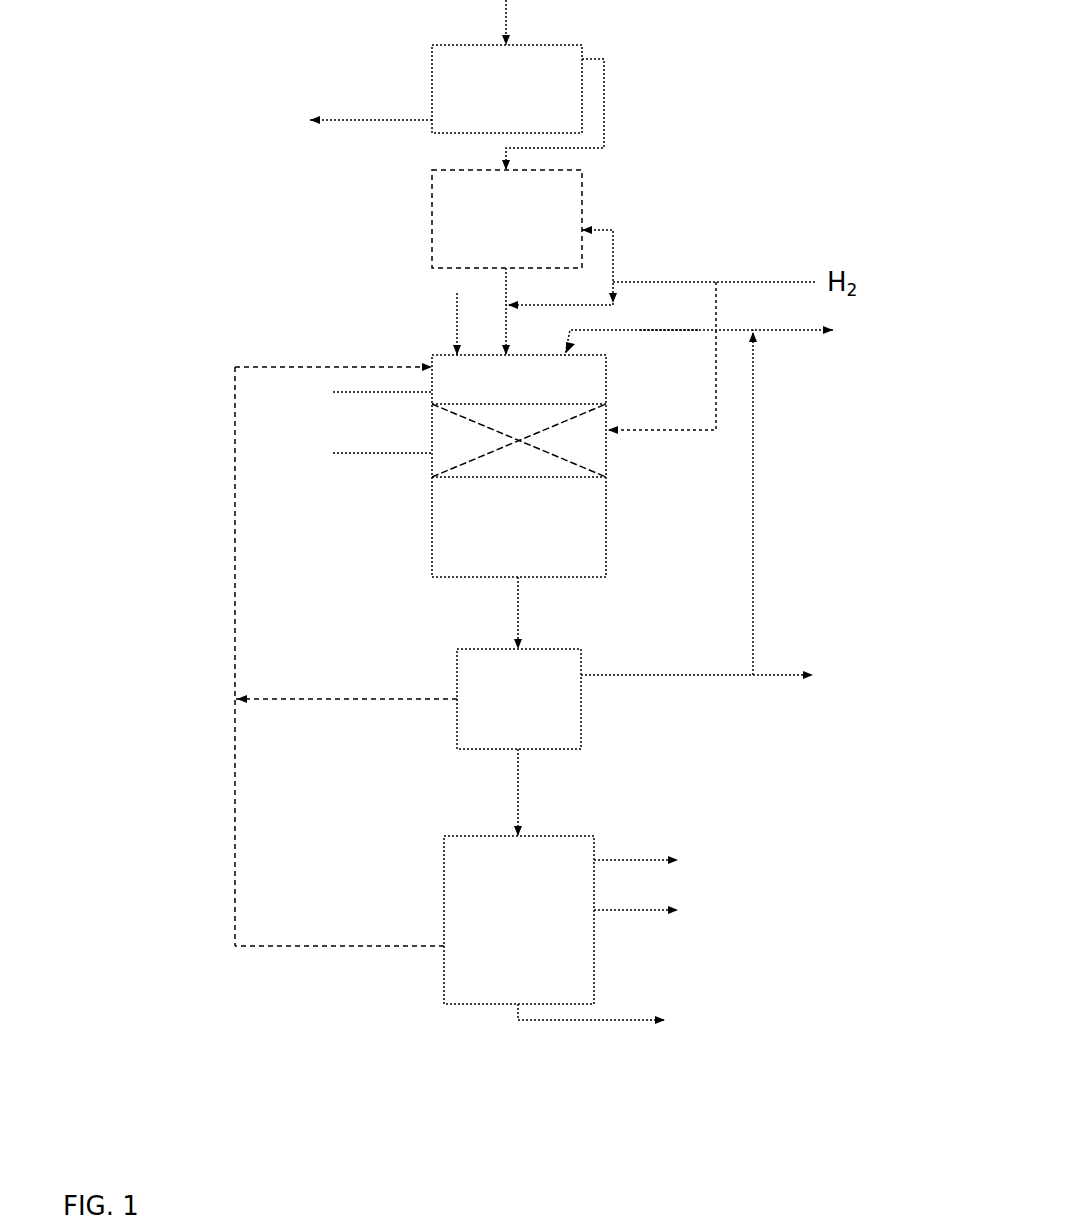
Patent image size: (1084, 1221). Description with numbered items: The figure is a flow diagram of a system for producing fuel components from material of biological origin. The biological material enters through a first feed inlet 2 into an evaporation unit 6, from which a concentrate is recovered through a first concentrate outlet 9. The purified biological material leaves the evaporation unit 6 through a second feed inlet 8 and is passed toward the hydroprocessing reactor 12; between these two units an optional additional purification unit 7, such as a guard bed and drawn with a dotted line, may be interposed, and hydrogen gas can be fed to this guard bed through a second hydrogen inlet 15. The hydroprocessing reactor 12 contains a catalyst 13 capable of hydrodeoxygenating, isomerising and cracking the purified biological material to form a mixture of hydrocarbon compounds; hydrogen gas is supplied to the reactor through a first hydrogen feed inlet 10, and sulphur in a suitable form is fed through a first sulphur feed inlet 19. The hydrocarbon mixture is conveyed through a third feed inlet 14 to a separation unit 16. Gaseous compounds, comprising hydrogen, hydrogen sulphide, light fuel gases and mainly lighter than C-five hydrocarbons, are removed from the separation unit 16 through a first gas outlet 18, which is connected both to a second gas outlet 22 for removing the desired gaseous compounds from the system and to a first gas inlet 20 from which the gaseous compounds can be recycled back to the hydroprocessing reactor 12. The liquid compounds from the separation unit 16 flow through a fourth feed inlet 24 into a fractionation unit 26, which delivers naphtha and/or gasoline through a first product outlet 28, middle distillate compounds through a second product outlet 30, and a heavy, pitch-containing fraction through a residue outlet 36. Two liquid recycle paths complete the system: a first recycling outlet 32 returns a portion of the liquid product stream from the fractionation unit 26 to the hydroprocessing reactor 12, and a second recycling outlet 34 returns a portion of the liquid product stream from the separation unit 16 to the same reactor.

The first feed inlet 2 is at (490, 22).
The evaporation unit 6 is at (507, 89).
The additional purification unit 7 is at (507, 219).
The second feed inlet 8 is at (573, 114).
The first concentrate outlet 9 is at (371, 102).
The first hydrogen feed inlet 10 is at (692, 430).
The hydroprocessing reactor 12 is at (360, 392).
The catalyst 13 is at (360, 453).
The third feed inlet 14 is at (491, 613).
The second hydrogen inlet 15 is at (562, 237).
The separation unit 16 is at (519, 699).
The first gas outlet 18 is at (753, 478).
The first sulphur feed inlet 19 is at (423, 324).
The first gas inlet 20 is at (667, 330).
The second gas outlet 22 is at (777, 330).
The fourth feed inlet 24 is at (518, 798).
The fractionation unit 26 is at (519, 920).
The first product outlet 28 is at (656, 860).
The second product outlet 30 is at (656, 910).
The first recycling outlet 32 is at (339, 656).
The second recycling outlet 34 is at (346, 533).
The residue outlet 36 is at (624, 1007).